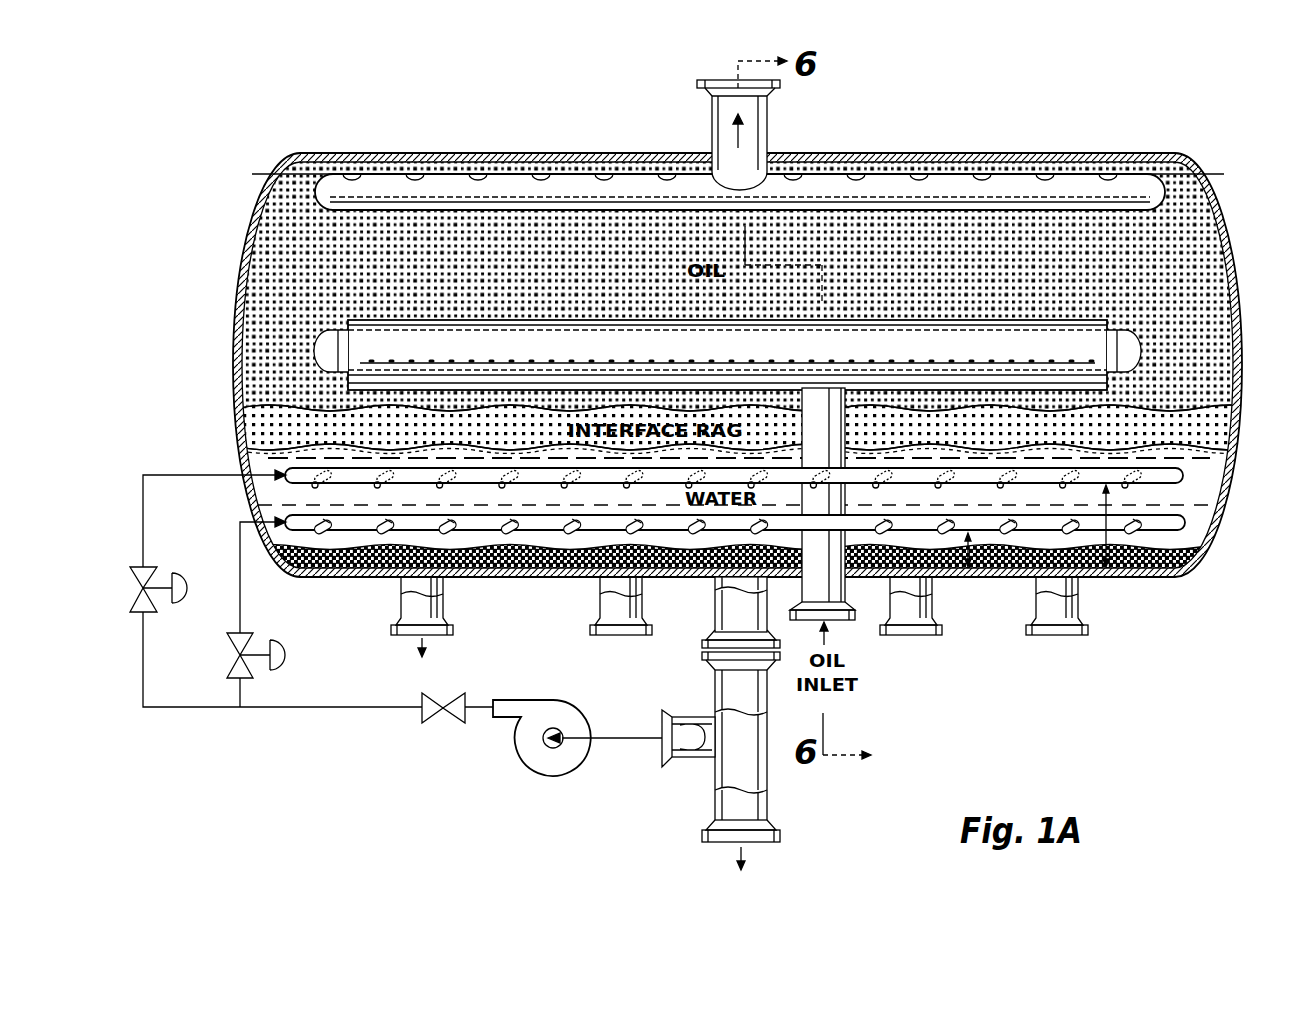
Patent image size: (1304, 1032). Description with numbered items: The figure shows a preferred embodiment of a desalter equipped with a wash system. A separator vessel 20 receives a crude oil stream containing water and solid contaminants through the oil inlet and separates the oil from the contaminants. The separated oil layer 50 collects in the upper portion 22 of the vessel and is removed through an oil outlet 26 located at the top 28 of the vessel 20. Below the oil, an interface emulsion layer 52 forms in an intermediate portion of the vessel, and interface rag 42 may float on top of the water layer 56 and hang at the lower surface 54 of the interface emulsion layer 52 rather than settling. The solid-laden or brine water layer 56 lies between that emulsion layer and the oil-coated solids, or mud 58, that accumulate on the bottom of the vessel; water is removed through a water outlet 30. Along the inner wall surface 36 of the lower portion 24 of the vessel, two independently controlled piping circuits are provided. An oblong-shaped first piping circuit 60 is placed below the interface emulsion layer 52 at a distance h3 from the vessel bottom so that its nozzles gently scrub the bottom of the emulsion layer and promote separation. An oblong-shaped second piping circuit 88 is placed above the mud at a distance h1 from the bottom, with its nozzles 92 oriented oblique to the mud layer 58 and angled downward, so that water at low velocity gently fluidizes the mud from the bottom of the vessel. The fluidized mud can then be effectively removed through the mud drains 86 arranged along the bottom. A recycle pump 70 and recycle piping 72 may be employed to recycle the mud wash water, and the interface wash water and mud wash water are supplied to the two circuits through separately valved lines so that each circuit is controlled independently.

The separator vessel 20 is at (712, 324).
The upper portion of vessel 22 is at (257, 197).
The lower portion of vessel 24 is at (245, 505).
The oil outlet 26 is at (710, 118).
The top of vessel 28 is at (815, 157).
The water outlet 30 is at (713, 613).
The inner wall surface of vessel 36 is at (530, 578).
The interface rag 42 is at (1195, 449).
The oil layer 50 is at (1148, 243).
The interface emulsion layer 52 is at (1243, 404).
The lower surface of interface emulsion layer 54 is at (727, 453).
The water layer 56 is at (1152, 498).
The oil-coated solids/mud 58 is at (1193, 565).
The first piping circuit 60 is at (1178, 485).
The recycle pump 70 is at (527, 750).
The recycle piping 72 is at (242, 601).
The mud drain 86 is at (443, 598).
The second piping circuit 88 is at (735, 570).
The nozzle 92 is at (326, 533).
The distance h1 is at (970, 572).
The distance h3 is at (1113, 537).